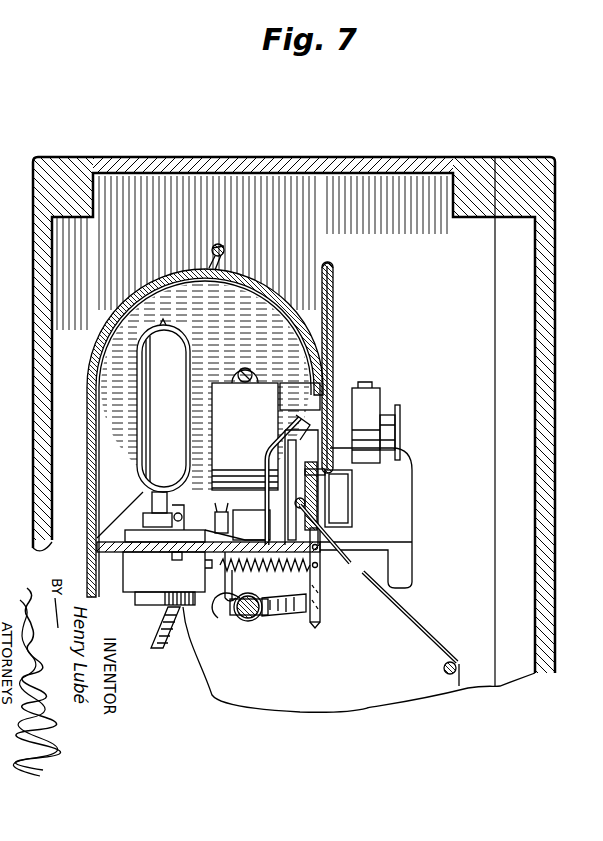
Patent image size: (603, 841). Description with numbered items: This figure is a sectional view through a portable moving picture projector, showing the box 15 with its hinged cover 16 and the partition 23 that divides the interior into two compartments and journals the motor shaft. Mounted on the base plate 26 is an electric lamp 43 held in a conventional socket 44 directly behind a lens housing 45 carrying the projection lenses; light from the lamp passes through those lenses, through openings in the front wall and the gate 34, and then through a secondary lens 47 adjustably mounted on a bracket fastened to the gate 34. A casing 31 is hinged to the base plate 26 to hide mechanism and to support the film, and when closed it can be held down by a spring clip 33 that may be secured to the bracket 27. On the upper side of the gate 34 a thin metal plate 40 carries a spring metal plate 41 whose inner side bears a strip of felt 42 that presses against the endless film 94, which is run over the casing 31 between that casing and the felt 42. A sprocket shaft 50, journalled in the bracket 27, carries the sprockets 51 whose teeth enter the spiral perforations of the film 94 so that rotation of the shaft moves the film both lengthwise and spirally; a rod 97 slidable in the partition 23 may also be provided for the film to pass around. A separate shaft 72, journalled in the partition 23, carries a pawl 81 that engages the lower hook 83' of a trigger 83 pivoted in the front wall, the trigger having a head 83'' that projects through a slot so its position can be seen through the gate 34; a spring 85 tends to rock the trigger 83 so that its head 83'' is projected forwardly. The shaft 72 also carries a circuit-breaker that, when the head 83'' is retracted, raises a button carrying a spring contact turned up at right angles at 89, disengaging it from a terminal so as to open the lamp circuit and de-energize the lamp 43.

The box 15 is at (306, 162).
The cover 16 is at (521, 178).
The partition 23 is at (513, 322).
The base plate 26 is at (110, 555).
The bracket 27 is at (413, 474).
The casing 31 is at (220, 277).
The spring clip 33 is at (271, 287).
The gate 34 is at (343, 502).
The thin metal plate 40 is at (335, 328).
The spring metal plate 41 is at (333, 302).
The strip of felt 42 is at (323, 301).
The electric lamp 43 is at (151, 430).
The socket 44 is at (167, 578).
The lens housing 45 is at (241, 454).
The secondary lens 47 is at (392, 414).
The sprocket shaft 50 is at (378, 583).
The sprockets 51 is at (303, 488).
The shaft 72 is at (248, 619).
The pawl 81 is at (285, 613).
The trigger 83 is at (336, 578).
The lower hook 83' is at (339, 611).
The head 83'' is at (339, 449).
The spring 85 is at (270, 570).
The turned-up portion of spring contact 89 is at (263, 457).
The endless film 94 is at (168, 274).
The rod 97 is at (444, 670).